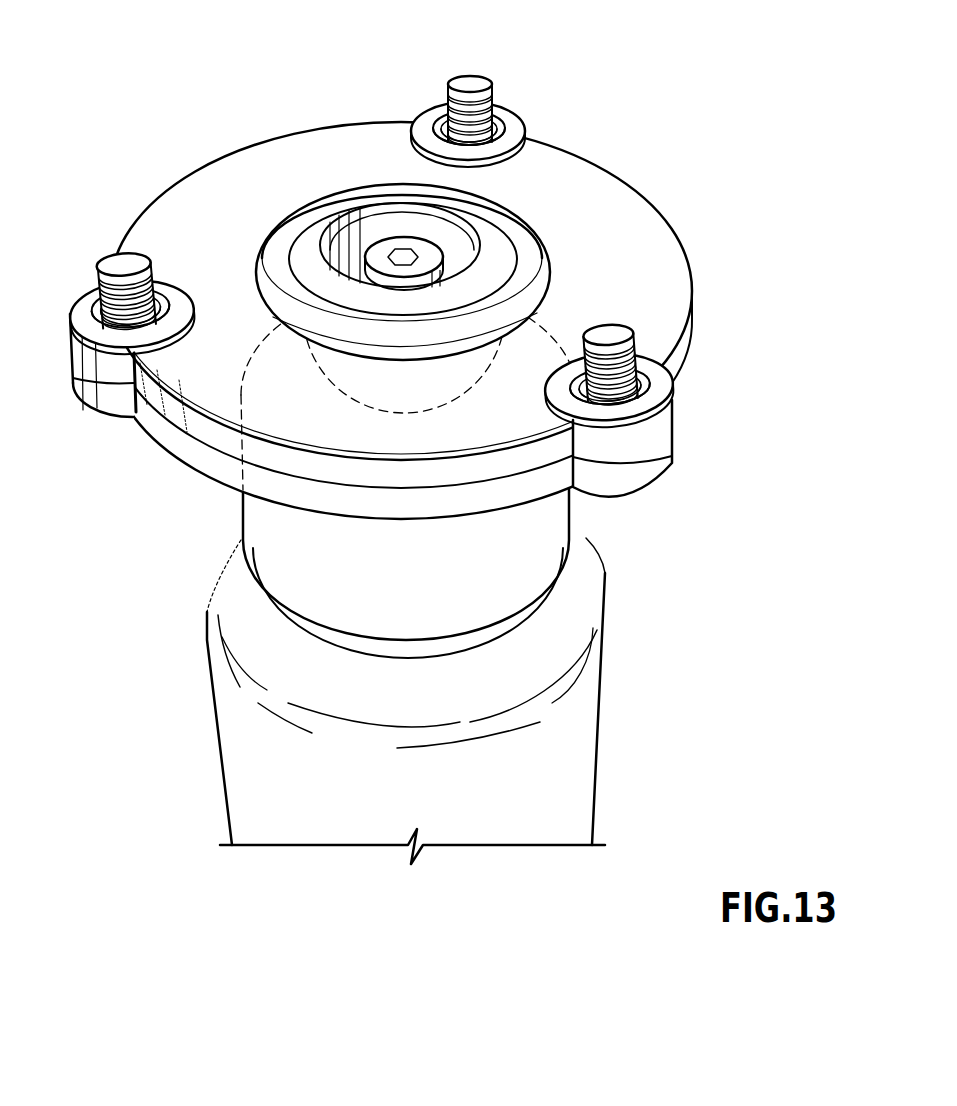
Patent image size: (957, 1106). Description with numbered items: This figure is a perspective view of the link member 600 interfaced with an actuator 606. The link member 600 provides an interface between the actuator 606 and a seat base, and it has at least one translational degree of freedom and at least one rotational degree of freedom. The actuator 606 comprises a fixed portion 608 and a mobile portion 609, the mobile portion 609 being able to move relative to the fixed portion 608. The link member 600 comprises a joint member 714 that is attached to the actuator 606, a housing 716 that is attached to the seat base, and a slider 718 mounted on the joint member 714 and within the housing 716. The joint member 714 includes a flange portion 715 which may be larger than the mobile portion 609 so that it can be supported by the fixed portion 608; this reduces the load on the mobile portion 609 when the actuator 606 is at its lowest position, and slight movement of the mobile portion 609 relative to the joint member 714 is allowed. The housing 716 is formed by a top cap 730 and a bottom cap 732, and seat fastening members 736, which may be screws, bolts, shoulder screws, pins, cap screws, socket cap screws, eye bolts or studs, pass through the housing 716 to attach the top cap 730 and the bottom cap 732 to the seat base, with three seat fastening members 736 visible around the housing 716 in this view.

The link member 600 is at (672, 72).
The actuator 606 is at (673, 700).
The fixed portion 608 is at (577, 720).
The mobile portion 609 is at (527, 553).
The joint member 714 is at (455, 240).
The flange portion 715 is at (353, 523).
The housing 716 is at (157, 477).
The slider 718 is at (503, 255).
The top cap 730 is at (657, 272).
The bottom cap 732 is at (657, 460).
The seat fastening members 736 is at (130, 270).